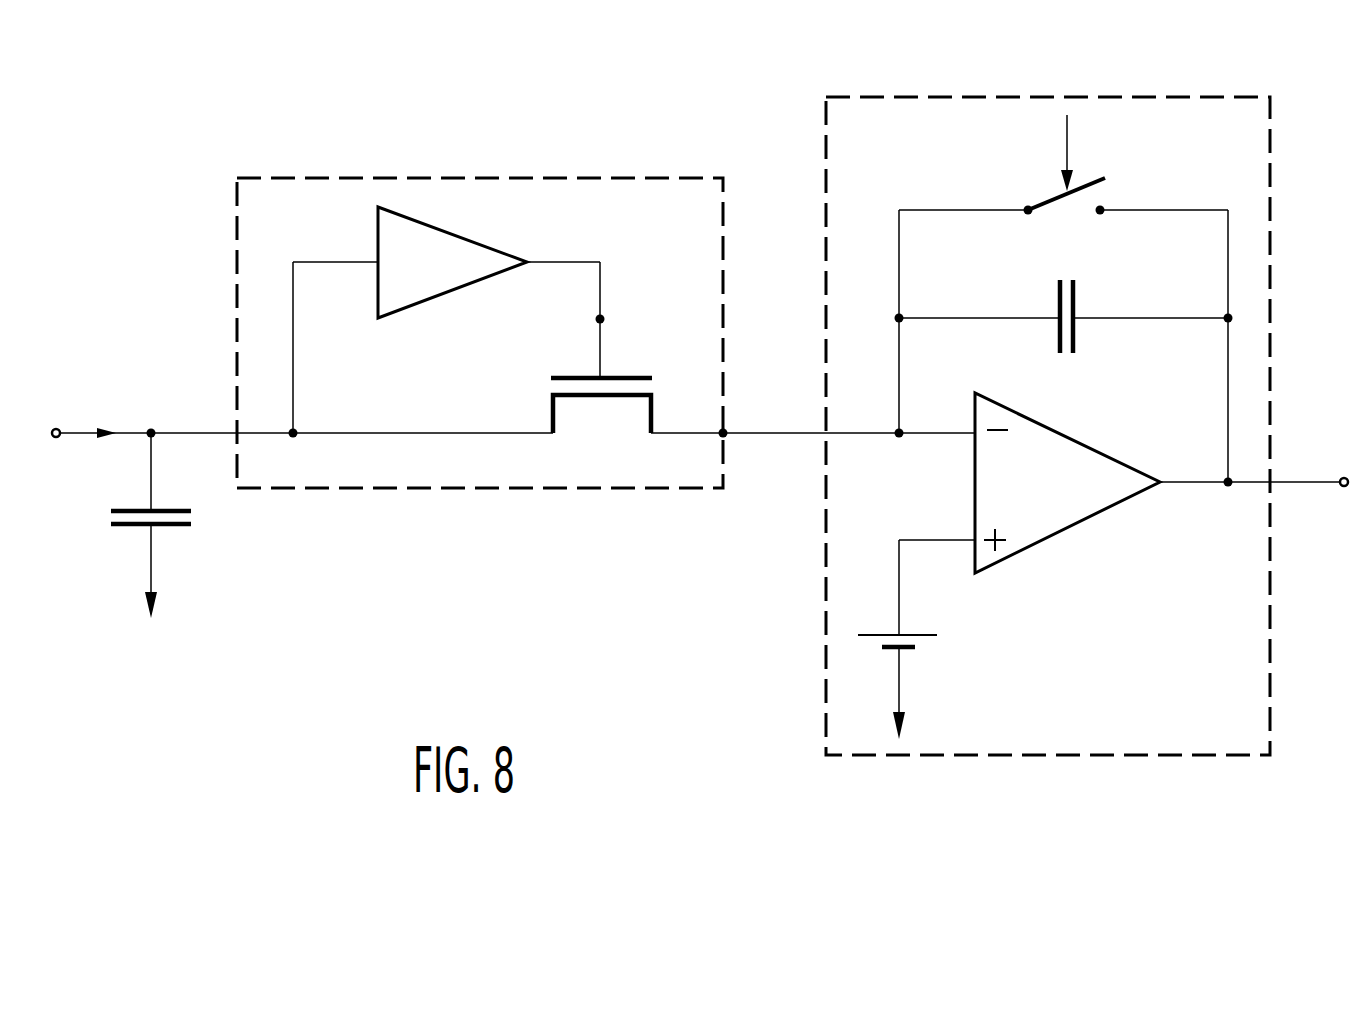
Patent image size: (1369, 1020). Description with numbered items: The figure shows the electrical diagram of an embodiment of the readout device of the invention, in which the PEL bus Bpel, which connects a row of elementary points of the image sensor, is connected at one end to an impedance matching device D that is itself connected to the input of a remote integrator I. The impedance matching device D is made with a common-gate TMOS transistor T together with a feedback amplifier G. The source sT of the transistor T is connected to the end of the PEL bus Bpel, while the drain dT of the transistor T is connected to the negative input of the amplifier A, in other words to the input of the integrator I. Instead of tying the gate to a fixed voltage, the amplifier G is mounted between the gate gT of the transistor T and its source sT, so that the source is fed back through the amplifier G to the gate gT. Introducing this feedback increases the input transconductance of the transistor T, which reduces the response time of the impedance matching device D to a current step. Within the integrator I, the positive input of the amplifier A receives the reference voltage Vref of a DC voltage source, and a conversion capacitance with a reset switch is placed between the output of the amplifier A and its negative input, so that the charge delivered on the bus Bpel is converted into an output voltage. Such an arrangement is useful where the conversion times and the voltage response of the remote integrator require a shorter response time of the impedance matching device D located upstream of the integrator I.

The PEL bus Bpel is at (188, 433).
The impedance matching device D is at (468, 178).
The amplifier G is at (434, 278).
The source sT is at (412, 366).
The gate gT is at (624, 320).
The TMOS transistor T is at (592, 414).
The drain dT is at (809, 415).
The integrator I is at (826, 133).
The amplifier A is at (1122, 344).
The reference voltage Vref is at (922, 639).